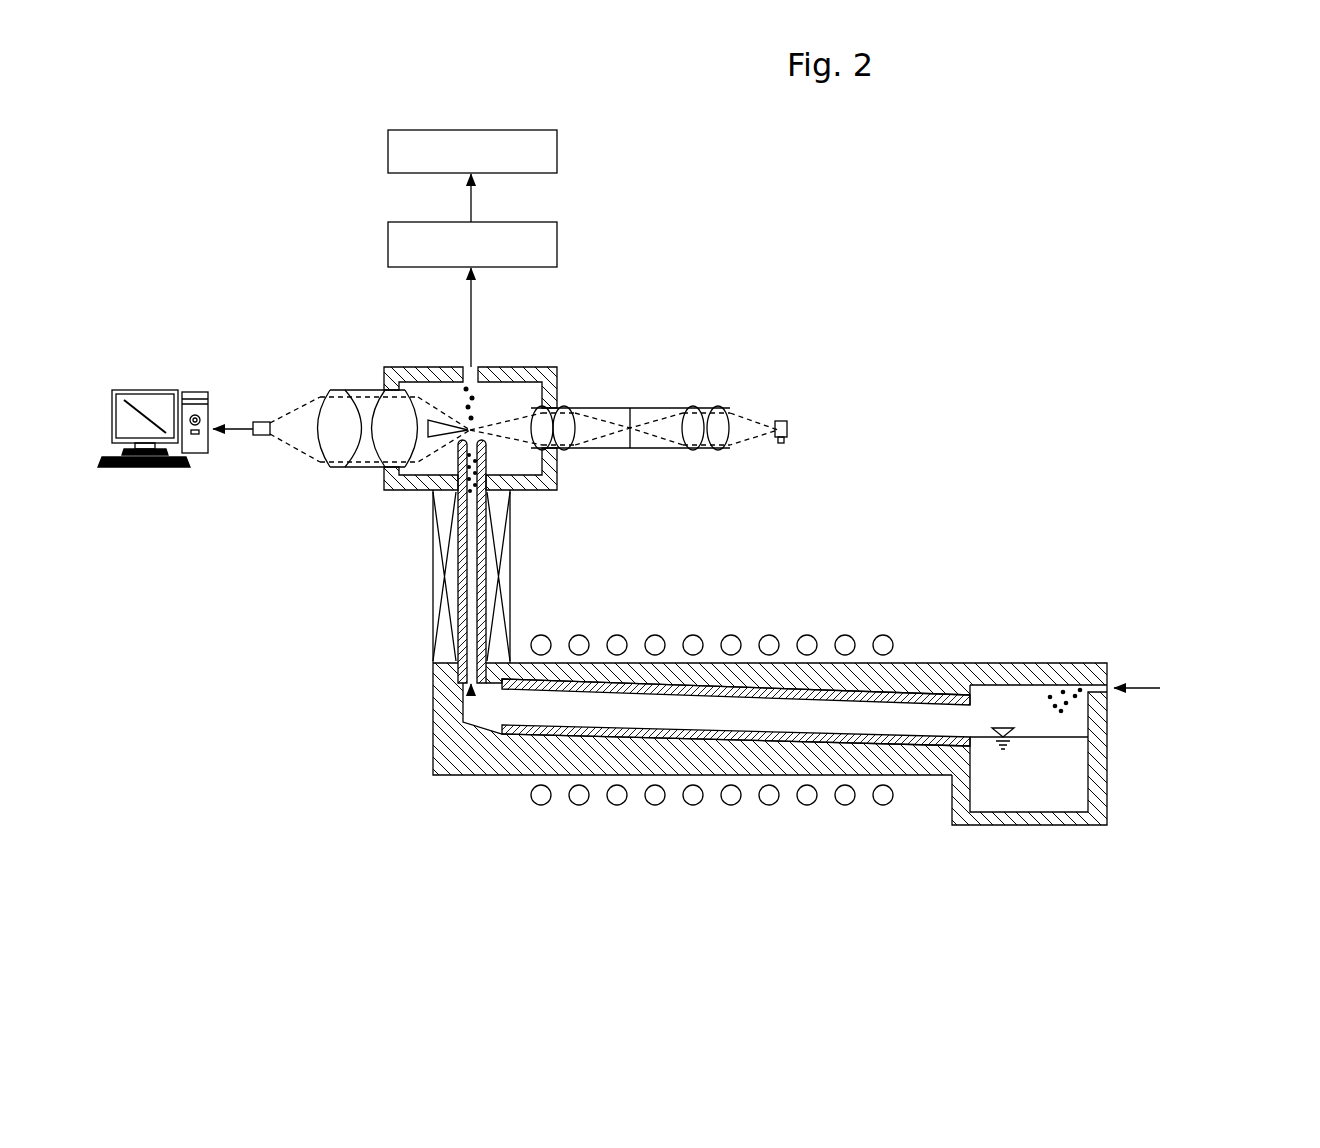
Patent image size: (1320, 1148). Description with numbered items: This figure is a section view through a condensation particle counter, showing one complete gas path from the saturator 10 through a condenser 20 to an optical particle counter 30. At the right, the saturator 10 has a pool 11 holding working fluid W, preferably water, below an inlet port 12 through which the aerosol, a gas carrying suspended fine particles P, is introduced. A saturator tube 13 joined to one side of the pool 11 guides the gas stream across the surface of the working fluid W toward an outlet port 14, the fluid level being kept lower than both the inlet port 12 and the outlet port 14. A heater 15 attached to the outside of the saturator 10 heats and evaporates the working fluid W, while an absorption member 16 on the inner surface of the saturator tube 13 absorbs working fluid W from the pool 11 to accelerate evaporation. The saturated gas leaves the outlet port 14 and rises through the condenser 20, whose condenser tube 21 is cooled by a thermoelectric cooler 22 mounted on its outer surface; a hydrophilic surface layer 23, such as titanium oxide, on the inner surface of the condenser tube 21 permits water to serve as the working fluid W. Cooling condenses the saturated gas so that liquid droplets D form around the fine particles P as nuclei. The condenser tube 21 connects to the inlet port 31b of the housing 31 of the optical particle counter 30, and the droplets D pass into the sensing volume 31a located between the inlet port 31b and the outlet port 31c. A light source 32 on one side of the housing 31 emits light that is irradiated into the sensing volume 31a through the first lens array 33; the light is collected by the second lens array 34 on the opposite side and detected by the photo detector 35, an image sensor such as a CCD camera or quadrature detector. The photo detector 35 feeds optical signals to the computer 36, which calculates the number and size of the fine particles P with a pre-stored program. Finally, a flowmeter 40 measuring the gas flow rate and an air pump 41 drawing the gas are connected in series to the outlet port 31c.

The saturator 10 is at (986, 829).
The pool 11 is at (1080, 778).
The inlet port 12 is at (1100, 688).
The saturator tube 13 is at (487, 763).
The outlet port 14 is at (497, 712).
The heater 15 is at (616, 805).
The absorption member 16 is at (709, 740).
The condenser 20 is at (431, 583).
The condenser tube 21 is at (483, 560).
The thermoelectric cooler 22 is at (509, 598).
The hydrophilic surface layer 23 is at (471, 598).
The optical particle counter 30 is at (559, 378).
The housing 31 is at (483, 367).
The sensing volume 31a is at (506, 399).
The inlet port 31b is at (486, 490).
The outlet port 31c is at (466, 370).
The light source 32 is at (781, 420).
The first lens array 33 is at (693, 404).
The second lens array 34 is at (321, 470).
The photo detector 35 is at (262, 421).
The computer 36 is at (195, 391).
The flowmeter 40 is at (388, 240).
The air pump 41 is at (388, 149).
The liquid droplets D is at (466, 410).
The fine particles P is at (1047, 684).
The working fluid W is at (1050, 790).